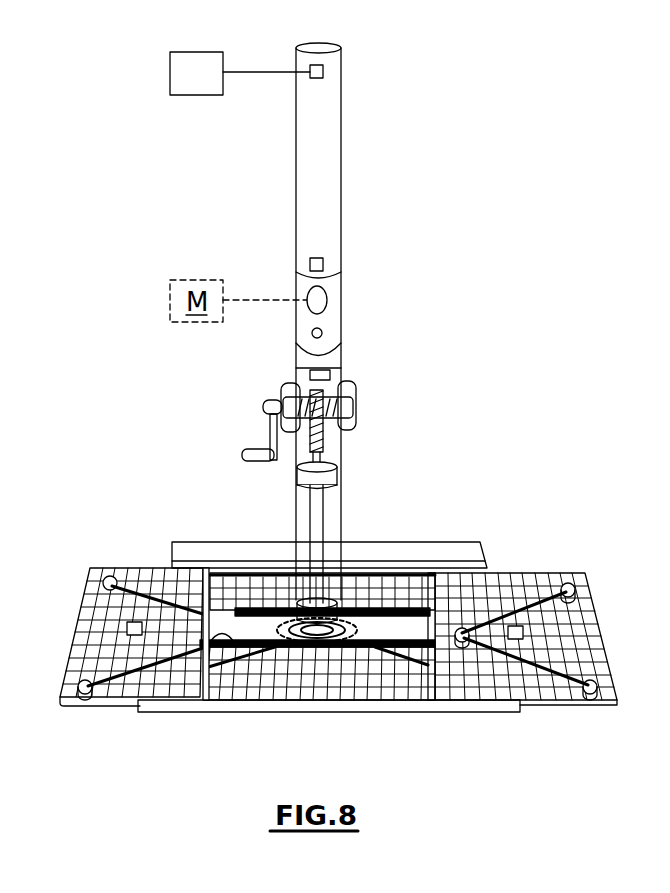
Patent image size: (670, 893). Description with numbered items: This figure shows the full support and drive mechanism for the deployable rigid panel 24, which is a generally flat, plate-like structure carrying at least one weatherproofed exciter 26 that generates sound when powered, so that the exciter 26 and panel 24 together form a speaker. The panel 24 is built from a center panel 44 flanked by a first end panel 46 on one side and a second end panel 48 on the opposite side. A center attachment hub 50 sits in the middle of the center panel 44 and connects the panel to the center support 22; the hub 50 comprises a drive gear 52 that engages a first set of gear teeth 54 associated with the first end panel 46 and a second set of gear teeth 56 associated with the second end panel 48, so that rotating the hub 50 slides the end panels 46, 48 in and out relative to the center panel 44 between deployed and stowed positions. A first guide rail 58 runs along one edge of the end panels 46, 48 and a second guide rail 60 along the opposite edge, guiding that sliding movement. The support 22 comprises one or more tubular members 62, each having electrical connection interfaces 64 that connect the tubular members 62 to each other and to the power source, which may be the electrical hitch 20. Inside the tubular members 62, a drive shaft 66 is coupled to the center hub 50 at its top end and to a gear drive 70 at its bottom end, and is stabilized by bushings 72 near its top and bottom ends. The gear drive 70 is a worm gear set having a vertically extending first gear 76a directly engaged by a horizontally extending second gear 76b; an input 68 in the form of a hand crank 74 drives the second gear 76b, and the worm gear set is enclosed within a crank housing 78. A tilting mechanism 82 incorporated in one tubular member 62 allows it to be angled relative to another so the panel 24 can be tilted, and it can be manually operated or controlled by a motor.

The electrical hitch 20 is at (211, 87).
The center support 22 is at (336, 321).
The rigid panel 24 is at (340, 633).
The exciter 26 is at (125, 628).
The center panel 44 is at (347, 700).
The first end panel 46 is at (108, 706).
The second end panel 48 is at (566, 690).
The center attachment hub 50 is at (305, 700).
The drive gear 52 is at (240, 700).
The first set of gear teeth 54 is at (190, 700).
The second set of gear teeth 56 is at (377, 648).
The first guide rail 58 is at (447, 567).
The second guide rail 60 is at (480, 705).
The tubular member 62 is at (305, 165).
The electrical connection interface 64 is at (324, 72).
The drive shaft 66 is at (310, 527).
The input 68 is at (222, 450).
The gear drive 70 is at (340, 405).
The bushing 72 is at (338, 480).
The hand crank 74 is at (258, 463).
The first gear 76a is at (325, 450).
The second gear 76b is at (355, 398).
The crank housing 78 is at (288, 398).
The tilting mechanism 82 is at (328, 300).